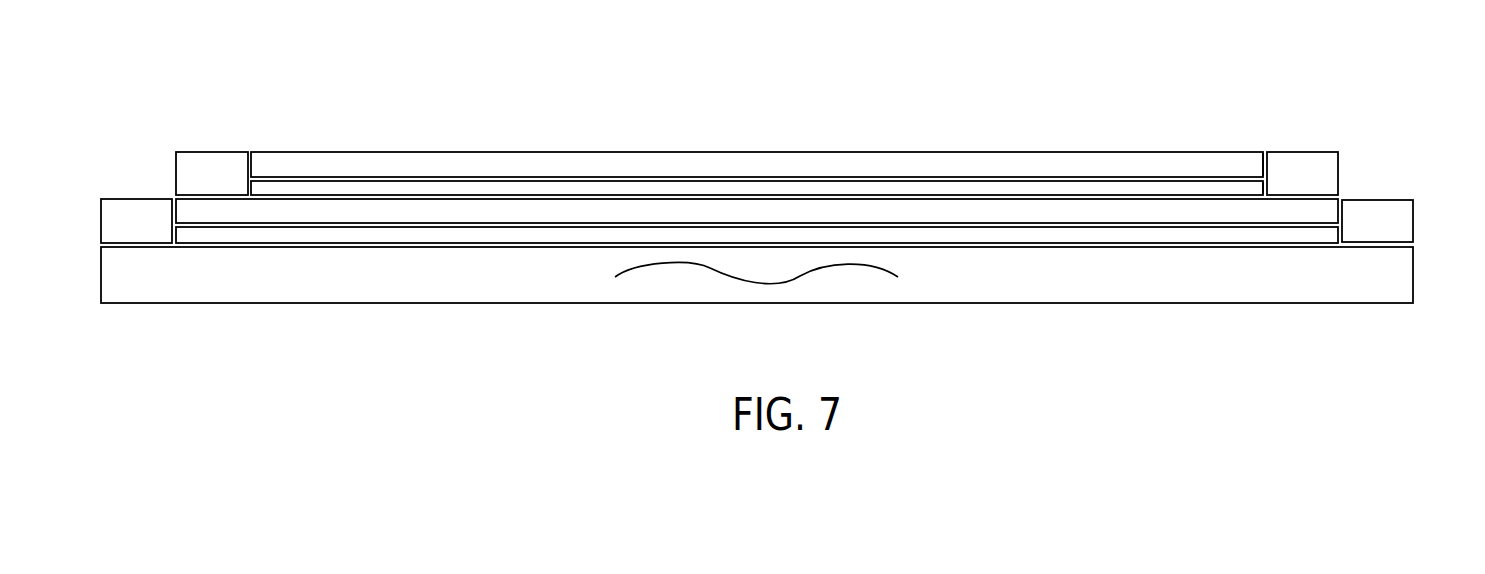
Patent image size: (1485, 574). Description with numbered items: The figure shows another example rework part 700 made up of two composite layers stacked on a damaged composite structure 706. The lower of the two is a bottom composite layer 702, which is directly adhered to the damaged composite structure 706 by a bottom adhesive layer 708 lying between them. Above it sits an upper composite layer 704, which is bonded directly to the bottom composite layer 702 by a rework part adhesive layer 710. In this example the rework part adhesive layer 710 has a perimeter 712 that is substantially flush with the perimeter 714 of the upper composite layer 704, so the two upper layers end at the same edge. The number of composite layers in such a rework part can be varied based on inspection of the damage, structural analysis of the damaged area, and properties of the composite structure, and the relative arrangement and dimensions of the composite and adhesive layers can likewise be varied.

The rework part 700 is at (769, 95).
The bottom composite layer 702 is at (1203, 212).
The upper composite layer 704 is at (1043, 166).
The damaged composite structure 706 is at (1413, 273).
The bottom adhesive layer 708 is at (1285, 235).
The rework part adhesive layer 710 is at (1127, 187).
The perimeter 712 is at (1262, 188).
The perimeter 714 is at (1262, 162).